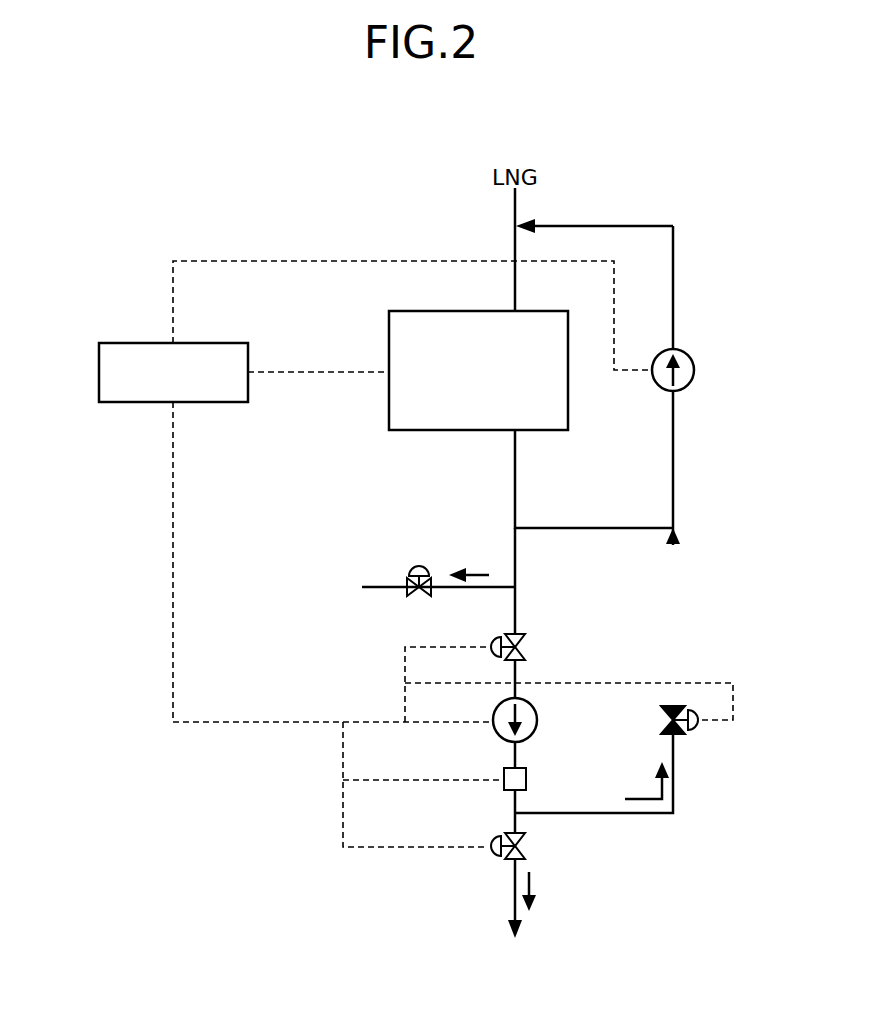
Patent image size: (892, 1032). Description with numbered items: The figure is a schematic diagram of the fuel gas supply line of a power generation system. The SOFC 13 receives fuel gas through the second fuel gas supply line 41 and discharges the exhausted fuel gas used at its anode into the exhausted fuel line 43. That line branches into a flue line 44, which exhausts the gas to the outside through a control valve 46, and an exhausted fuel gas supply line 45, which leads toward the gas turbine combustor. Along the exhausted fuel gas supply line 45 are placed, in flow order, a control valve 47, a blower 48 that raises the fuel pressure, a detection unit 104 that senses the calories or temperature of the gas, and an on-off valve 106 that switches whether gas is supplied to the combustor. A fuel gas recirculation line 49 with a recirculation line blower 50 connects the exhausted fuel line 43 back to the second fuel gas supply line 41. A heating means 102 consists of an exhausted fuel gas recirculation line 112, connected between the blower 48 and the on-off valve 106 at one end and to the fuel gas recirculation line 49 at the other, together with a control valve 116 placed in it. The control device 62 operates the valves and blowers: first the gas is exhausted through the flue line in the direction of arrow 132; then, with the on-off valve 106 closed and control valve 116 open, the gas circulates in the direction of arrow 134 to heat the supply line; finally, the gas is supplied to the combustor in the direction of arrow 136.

The SOFC 13 is at (390, 405).
The second fuel gas supply line 41 is at (514, 292).
The exhausted fuel line 43 is at (517, 483).
The flue line 44 is at (382, 585).
The exhausted fuel gas supply line 45 is at (517, 612).
The control valve 46 is at (419, 559).
The control valve 47 is at (486, 652).
The blower 48 is at (538, 720).
The fuel gas recirculation line 49 is at (675, 477).
The recirculation line blower 50 is at (695, 370).
The control device 62 is at (98, 373).
The heating means 102 is at (723, 626).
The detection unit 104 is at (527, 779).
The on-off valve 106 is at (492, 852).
The exhausted fuel gas recirculation line 112 is at (675, 788).
The control valve 116 is at (698, 731).
The arrow 132 is at (474, 573).
The arrow 134 is at (642, 814).
The arrow 136 is at (533, 887).